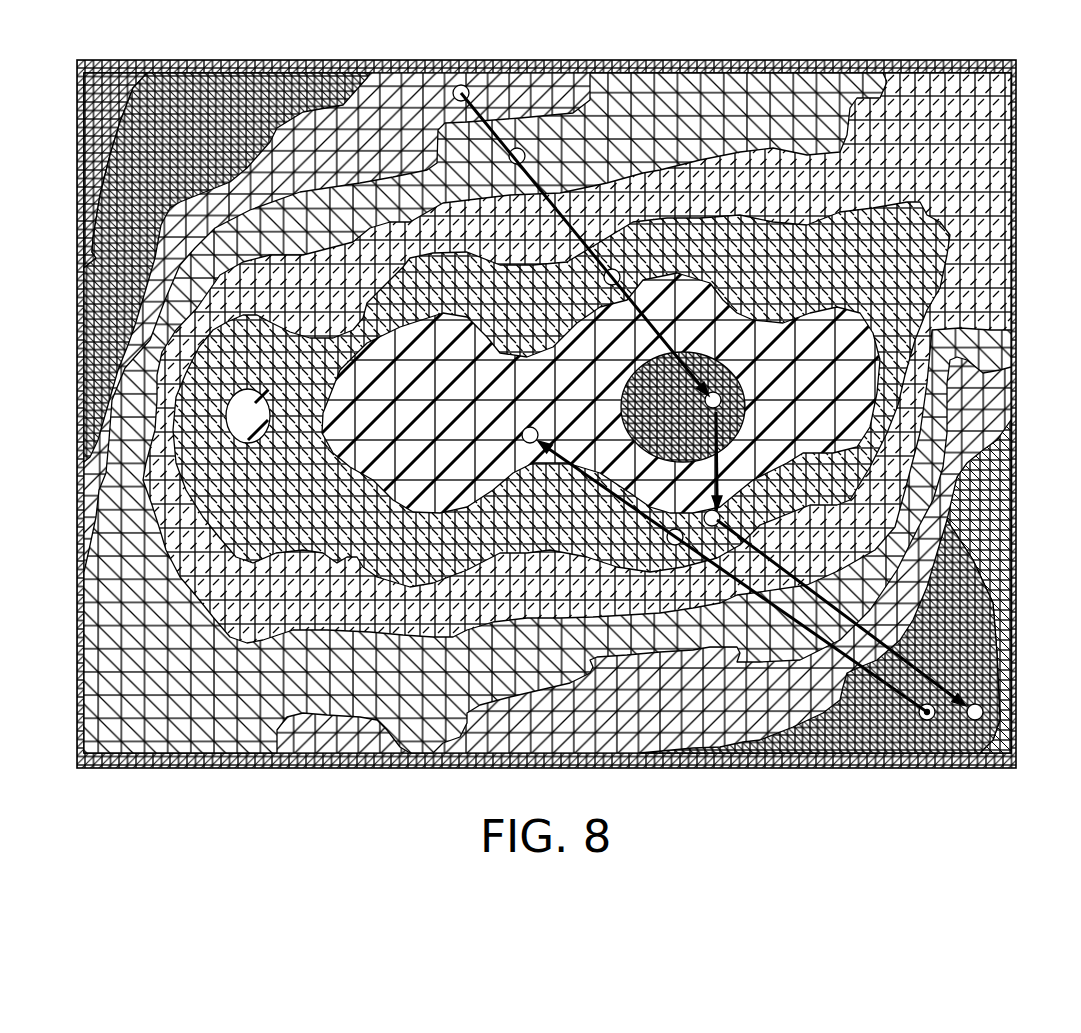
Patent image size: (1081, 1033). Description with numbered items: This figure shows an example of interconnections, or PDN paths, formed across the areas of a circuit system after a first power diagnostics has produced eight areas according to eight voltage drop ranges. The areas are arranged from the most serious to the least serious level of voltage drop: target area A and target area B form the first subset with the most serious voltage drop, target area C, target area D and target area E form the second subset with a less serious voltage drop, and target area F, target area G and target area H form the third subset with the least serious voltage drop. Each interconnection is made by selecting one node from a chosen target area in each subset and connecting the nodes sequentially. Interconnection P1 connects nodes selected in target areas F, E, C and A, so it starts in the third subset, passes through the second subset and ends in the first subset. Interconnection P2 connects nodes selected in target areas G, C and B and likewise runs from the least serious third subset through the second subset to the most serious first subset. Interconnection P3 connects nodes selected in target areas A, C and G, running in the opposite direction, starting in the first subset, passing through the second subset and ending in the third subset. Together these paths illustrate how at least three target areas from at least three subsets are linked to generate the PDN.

The target area A is at (683, 407).
The target area B is at (553, 393).
The target area C is at (561, 394).
The target area D is at (577, 358).
The target area E is at (547, 413).
The target area F is at (547, 413).
The target area G is at (227, 267).
The target area H is at (546, 414).
The interconnection P1 is at (585, 244).
The interconnection P2 is at (734, 578).
The interconnection P3 is at (839, 559).